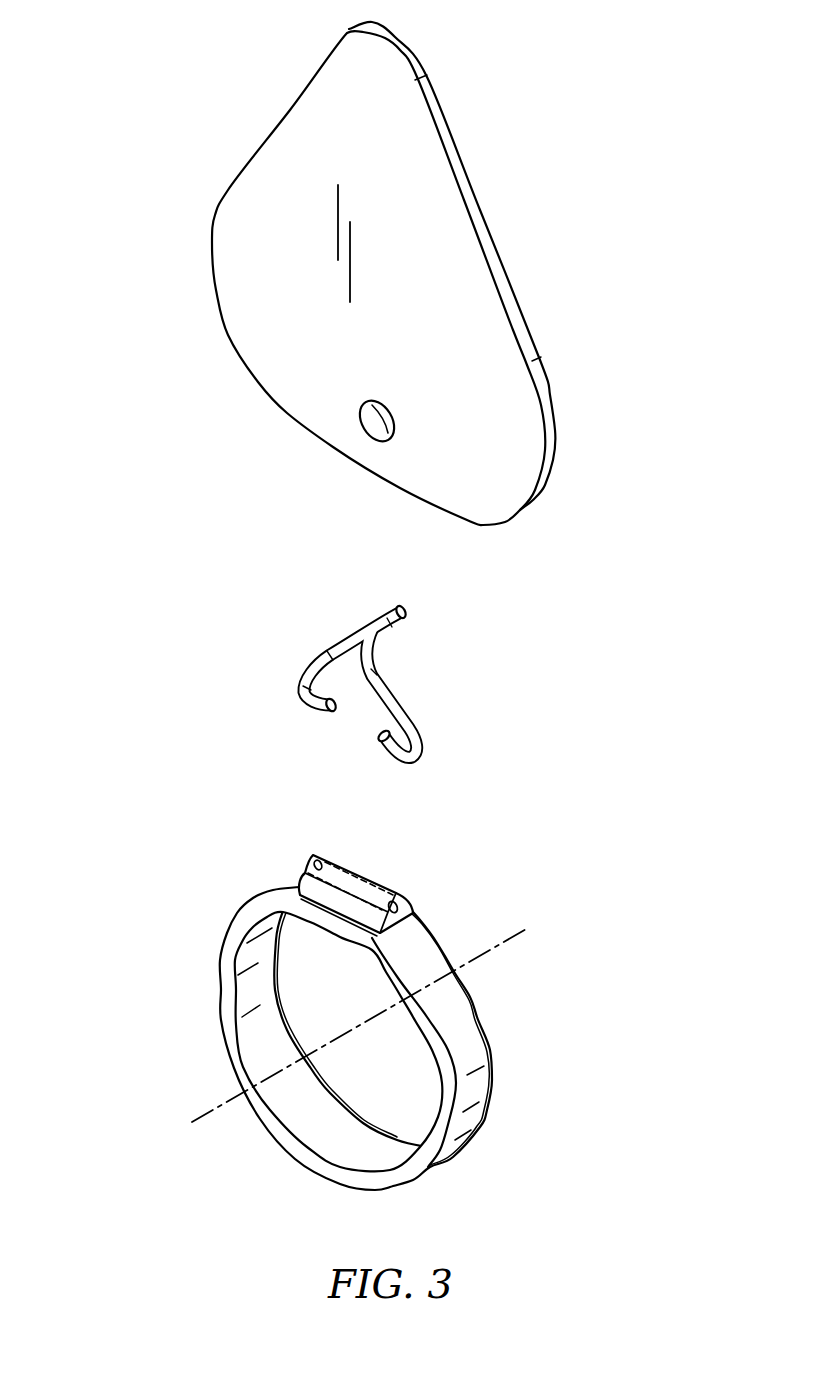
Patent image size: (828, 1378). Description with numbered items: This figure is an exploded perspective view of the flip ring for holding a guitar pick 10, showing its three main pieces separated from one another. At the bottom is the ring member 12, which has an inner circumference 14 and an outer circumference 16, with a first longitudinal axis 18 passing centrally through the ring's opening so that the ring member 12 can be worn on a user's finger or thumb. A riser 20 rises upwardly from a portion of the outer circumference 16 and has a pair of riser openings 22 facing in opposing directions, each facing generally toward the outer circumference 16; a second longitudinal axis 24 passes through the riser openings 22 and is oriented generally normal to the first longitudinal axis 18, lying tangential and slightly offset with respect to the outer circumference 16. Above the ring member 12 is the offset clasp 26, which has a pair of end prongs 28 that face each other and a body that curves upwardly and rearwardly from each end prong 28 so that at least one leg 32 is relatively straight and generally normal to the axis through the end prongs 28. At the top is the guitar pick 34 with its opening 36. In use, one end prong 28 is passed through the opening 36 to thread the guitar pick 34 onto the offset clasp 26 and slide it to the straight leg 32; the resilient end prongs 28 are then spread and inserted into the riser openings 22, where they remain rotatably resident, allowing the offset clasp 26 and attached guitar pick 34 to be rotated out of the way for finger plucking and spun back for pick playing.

The flip ring for holding a guitar pick 10 is at (155, 960).
The ring member 12 is at (500, 1084).
The inner circumference 14 is at (275, 1032).
The outer circumference 16 is at (463, 1031).
The first longitudinal axis 18 is at (528, 930).
The riser 20 is at (400, 868).
The riser openings 22 is at (322, 860).
The second longitudinal axis 24 is at (305, 882).
The offset clasp 26 is at (394, 720).
The end prongs 28 is at (317, 707).
The leg 32 is at (377, 629).
The guitar pick 34 is at (540, 325).
The opening 36 is at (369, 428).